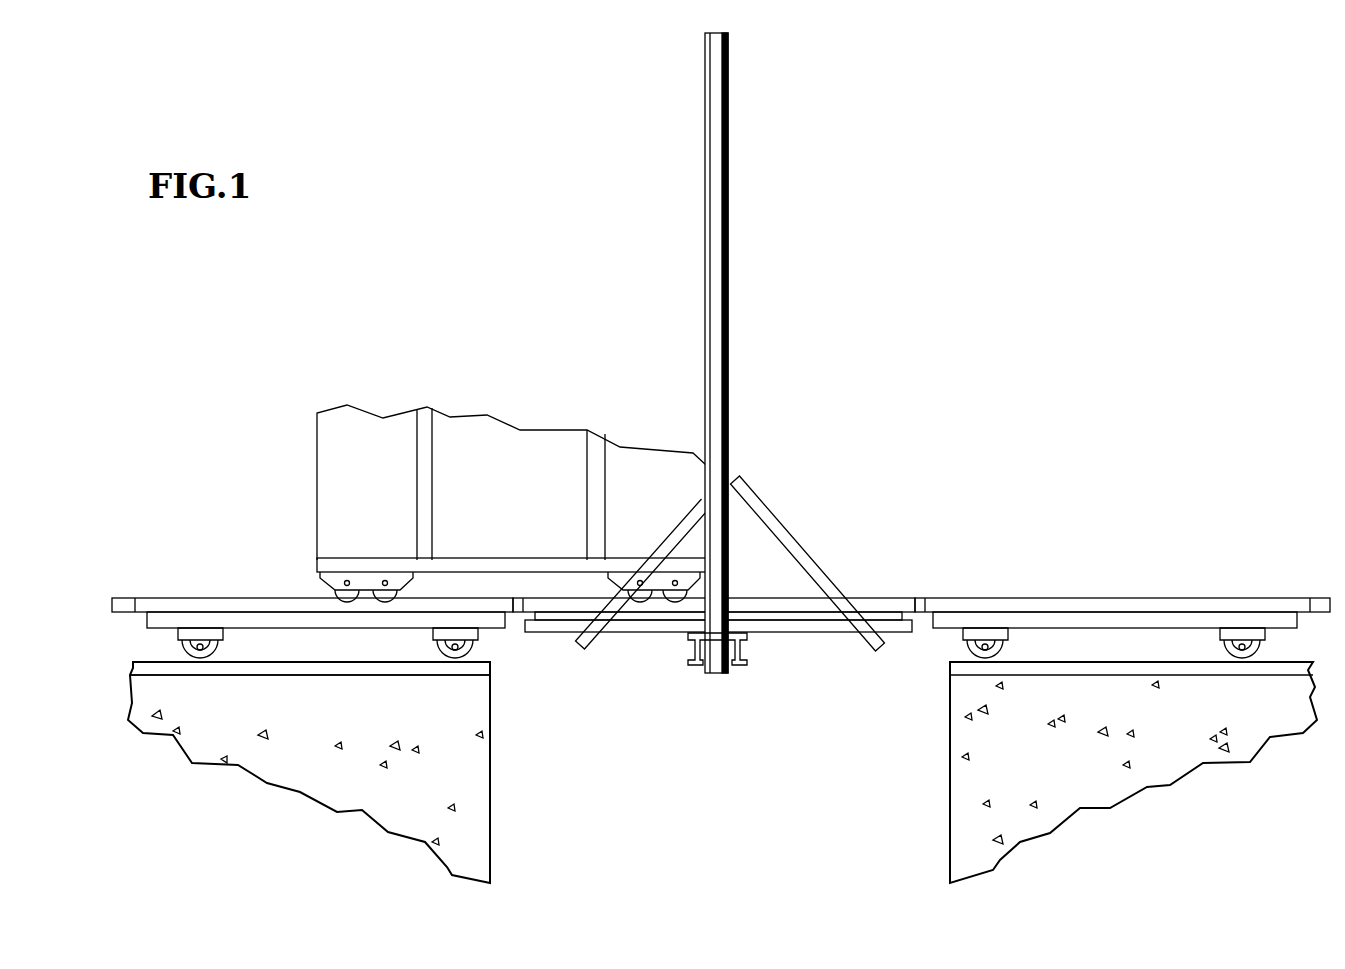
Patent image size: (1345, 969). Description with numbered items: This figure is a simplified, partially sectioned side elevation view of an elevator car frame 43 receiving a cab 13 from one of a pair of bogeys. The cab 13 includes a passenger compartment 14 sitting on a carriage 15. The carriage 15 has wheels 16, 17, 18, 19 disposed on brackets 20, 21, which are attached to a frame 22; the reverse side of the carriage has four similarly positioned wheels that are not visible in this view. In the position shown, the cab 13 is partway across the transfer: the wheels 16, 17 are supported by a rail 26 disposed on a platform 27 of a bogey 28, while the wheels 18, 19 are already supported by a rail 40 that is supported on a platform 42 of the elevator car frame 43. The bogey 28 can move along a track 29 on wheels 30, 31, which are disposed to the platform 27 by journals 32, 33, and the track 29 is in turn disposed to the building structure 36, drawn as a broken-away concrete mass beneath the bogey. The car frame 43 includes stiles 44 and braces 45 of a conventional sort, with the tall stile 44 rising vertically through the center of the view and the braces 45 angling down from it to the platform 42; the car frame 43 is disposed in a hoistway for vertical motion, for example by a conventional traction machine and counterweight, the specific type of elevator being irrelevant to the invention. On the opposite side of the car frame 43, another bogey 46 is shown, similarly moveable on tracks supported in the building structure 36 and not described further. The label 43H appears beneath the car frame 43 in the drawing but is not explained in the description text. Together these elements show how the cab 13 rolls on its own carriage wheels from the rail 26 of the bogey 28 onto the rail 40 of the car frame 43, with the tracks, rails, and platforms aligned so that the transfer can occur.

The cab 13 is at (464, 524).
The passenger compartment 14 is at (520, 462).
The carriage 15 is at (467, 594).
The wheel 16 is at (330, 592).
The wheel 17 is at (395, 596).
The wheel 18 is at (647, 592).
The wheel 19 is at (675, 593).
The bracket 20 is at (370, 562).
The bracket 21 is at (654, 595).
The frame 22 is at (485, 565).
The rail 26 is at (220, 597).
The platform 27 is at (147, 616).
The bogey 28 is at (303, 589).
The track 29 is at (338, 670).
The wheel 30 is at (222, 647).
The wheel 31 is at (432, 648).
The journal 32 is at (178, 633).
The journal 33 is at (478, 633).
The building structure 36 is at (300, 772).
The rail 40 is at (742, 598).
The platform 42 is at (778, 617).
The elevator car frame 43 is at (730, 419).
The column height 43H is at (741, 805).
The stile 44 is at (728, 185).
The brace 45 is at (692, 532).
The bogey 46 is at (1158, 598).